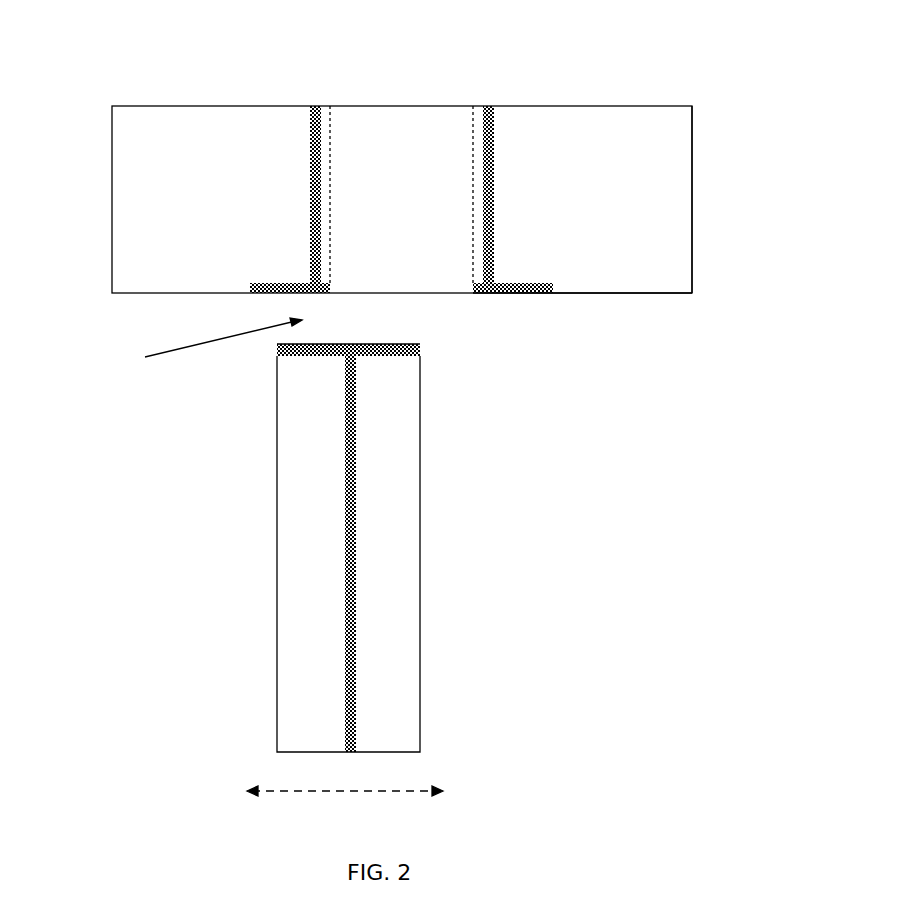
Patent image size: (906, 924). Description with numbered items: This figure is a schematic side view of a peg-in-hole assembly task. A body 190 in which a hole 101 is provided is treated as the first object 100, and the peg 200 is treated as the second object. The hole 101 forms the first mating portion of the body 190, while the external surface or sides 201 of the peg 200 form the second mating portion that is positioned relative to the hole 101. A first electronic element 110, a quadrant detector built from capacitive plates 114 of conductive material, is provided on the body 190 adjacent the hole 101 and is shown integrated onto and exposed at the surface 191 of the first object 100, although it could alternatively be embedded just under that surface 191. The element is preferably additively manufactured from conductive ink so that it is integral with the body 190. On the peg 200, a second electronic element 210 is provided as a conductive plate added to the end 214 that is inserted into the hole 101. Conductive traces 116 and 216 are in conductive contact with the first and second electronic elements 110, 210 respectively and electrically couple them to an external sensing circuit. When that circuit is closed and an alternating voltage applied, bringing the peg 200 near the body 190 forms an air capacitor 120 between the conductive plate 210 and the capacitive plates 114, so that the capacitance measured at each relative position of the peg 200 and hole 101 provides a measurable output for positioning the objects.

The first object 100 is at (632, 88).
The hole 101 is at (394, 137).
The first electronic element 110 is at (526, 298).
The capacitive plates 114 is at (272, 283).
The conductive traces 116 is at (483, 183).
The air capacitor 120 is at (203, 349).
The body 190 is at (653, 179).
The surface 191 is at (620, 293).
The peg 200 is at (355, 570).
The second mating portion 201 is at (292, 542).
The second electronic element 210 is at (314, 357).
The end 214 is at (378, 350).
The conductive traces 216 is at (343, 482).